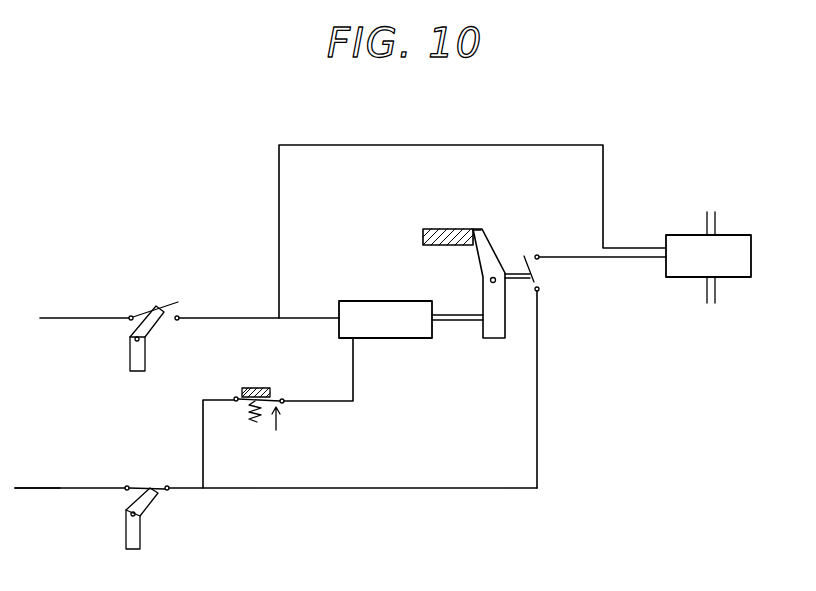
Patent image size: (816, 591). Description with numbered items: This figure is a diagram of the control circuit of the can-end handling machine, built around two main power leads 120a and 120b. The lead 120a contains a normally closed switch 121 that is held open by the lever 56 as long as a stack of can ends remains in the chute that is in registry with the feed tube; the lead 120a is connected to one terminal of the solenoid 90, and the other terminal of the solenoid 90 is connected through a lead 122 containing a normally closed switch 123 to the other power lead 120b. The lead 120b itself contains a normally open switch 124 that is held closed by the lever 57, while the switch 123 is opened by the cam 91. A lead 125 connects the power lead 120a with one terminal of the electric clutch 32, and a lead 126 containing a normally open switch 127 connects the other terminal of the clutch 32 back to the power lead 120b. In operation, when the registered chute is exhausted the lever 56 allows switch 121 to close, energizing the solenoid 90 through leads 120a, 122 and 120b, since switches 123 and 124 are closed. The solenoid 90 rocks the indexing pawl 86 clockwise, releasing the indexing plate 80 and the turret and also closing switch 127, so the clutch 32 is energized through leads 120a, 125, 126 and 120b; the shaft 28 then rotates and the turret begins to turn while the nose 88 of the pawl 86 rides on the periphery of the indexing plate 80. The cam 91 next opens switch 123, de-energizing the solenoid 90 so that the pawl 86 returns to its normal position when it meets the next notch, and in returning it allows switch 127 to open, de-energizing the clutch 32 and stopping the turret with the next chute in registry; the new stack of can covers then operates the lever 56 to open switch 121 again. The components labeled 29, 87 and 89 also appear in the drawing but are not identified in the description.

The shaft 28 is at (716, 220).
The outlet conduit 29 is at (718, 292).
The electric clutch 32 is at (752, 250).
The lever 56 is at (130, 360).
The lever 57 is at (126, 538).
The indexing plate 80 is at (430, 229).
The indexing pawl 86 is at (483, 292).
The pivot 87 is at (490, 279).
The nose 88 is at (485, 236).
The link rod 89 is at (453, 321).
The solenoid 90 is at (361, 301).
The cam 91 is at (250, 388).
The main power lead 120a is at (97, 318).
The main power lead 120b is at (57, 490).
The normally closed switch 121 is at (170, 305).
The lead 122 is at (354, 386).
The normally closed switch 123 is at (283, 406).
The normally open switch 124 is at (163, 491).
The lead 125 is at (465, 145).
The lead 126 is at (631, 257).
The normally open switch 127 is at (535, 278).